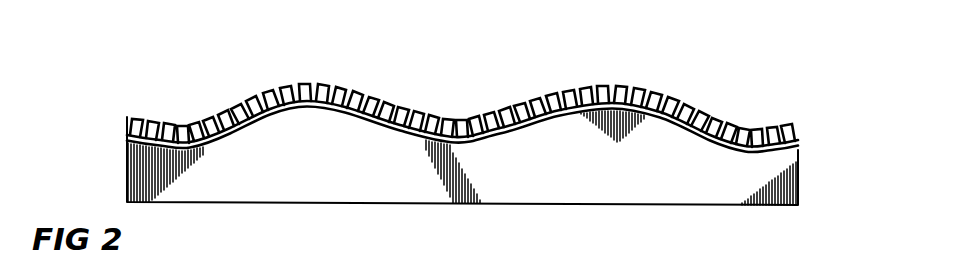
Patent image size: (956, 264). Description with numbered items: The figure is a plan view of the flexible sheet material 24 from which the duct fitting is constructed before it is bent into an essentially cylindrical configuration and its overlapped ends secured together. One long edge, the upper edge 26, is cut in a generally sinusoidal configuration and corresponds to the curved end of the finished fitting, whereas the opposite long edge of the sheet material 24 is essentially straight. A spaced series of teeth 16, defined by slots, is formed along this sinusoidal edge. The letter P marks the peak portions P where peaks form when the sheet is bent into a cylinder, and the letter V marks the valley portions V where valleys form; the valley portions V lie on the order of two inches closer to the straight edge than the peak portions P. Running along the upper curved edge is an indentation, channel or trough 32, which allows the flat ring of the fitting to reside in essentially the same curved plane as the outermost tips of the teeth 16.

The teeth 16 is at (242, 104).
The peak portions P is at (462, 106).
The valley portions V is at (450, 122).
The upper edge 26 is at (481, 100).
The sheet material 24 is at (768, 160).
The channel 32 is at (387, 127).